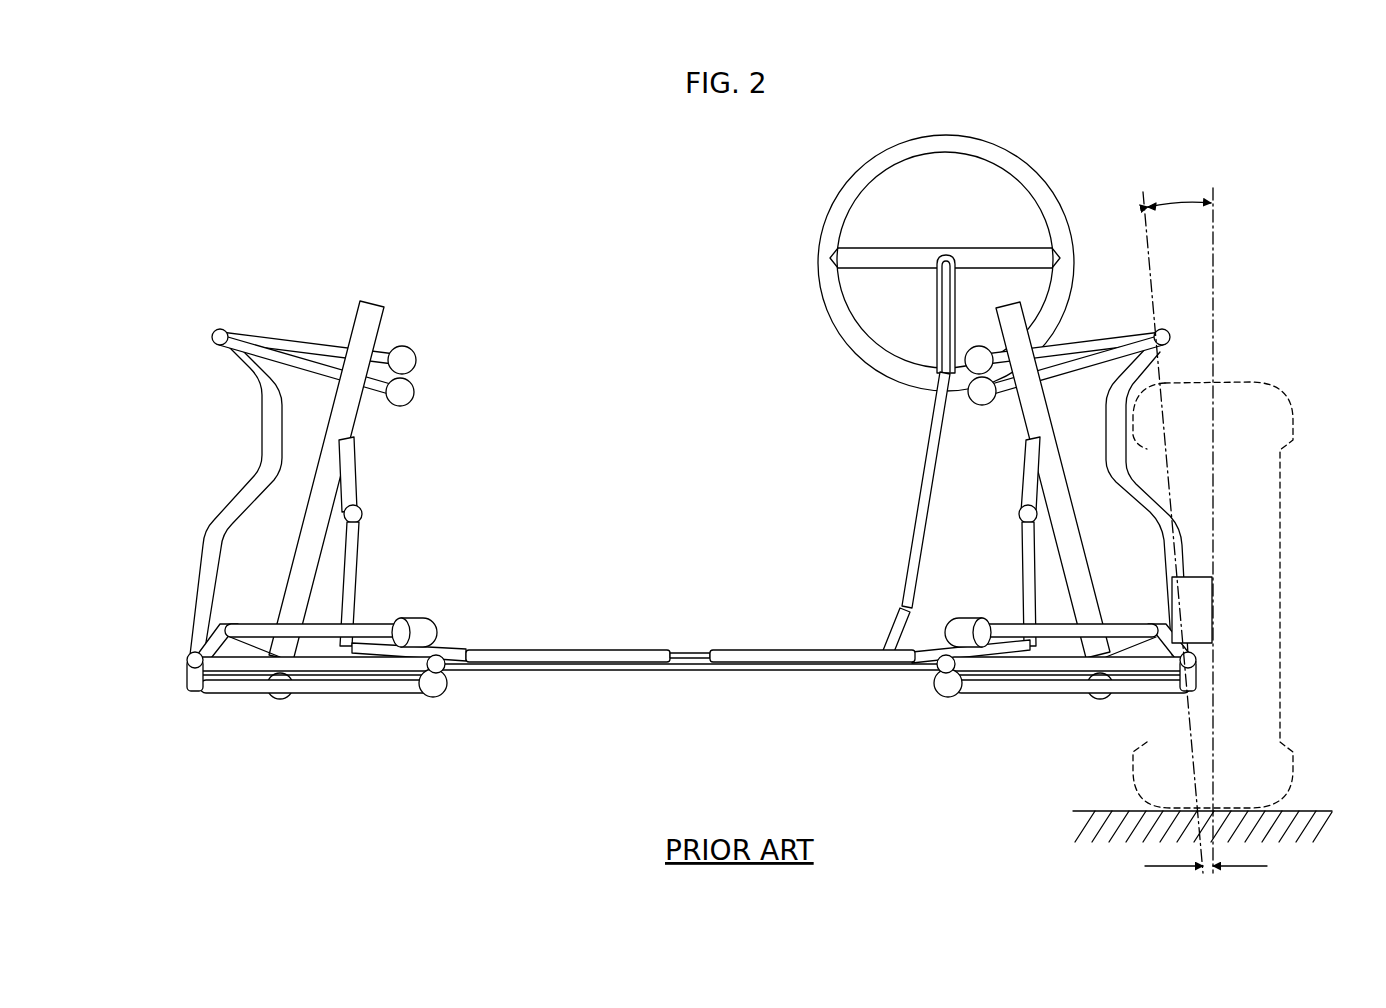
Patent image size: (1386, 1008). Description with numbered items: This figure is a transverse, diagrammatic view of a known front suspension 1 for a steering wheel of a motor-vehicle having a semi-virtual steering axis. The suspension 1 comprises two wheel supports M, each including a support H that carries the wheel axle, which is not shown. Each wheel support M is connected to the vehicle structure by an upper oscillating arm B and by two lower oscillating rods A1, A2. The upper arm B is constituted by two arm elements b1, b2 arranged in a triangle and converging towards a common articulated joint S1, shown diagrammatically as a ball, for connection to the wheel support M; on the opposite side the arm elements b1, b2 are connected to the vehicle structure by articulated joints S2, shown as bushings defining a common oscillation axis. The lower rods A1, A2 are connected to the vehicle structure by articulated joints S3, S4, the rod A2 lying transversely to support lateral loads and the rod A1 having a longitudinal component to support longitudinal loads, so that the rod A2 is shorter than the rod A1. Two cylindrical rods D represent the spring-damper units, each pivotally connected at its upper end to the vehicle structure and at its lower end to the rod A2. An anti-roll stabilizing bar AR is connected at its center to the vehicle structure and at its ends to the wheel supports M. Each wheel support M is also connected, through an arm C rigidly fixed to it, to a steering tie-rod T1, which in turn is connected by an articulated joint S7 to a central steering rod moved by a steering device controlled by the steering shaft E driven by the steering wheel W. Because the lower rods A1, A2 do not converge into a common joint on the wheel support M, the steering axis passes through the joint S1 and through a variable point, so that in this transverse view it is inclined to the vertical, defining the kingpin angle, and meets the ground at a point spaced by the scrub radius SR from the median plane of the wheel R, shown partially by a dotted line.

The front suspension 1 is at (517, 225).
The steering wheel W is at (830, 316).
The steering shaft E is at (915, 510).
The upper oscillating arm B is at (691, 344).
The arm element b1 is at (330, 338).
The arm element b2 is at (313, 378).
The articulated joint S1 is at (214, 332).
The articulated joints S2 is at (412, 357).
The wheel support M is at (250, 478).
The cylindrical rod D is at (360, 438).
The lower oscillating rod A1 is at (322, 620).
The lower oscillating rod A2 is at (367, 695).
The steering tie-rod T1 is at (320, 665).
The articulated joint S3 is at (416, 626).
The articulated joint S4 is at (434, 688).
The articulated joint S7 is at (444, 668).
The anti-roll stabilizing bar AR is at (556, 647).
The arm C is at (190, 680).
The support H is at (1200, 585).
The median plane of the wheel R is at (1252, 383).
The scrub radius SR is at (1203, 862).